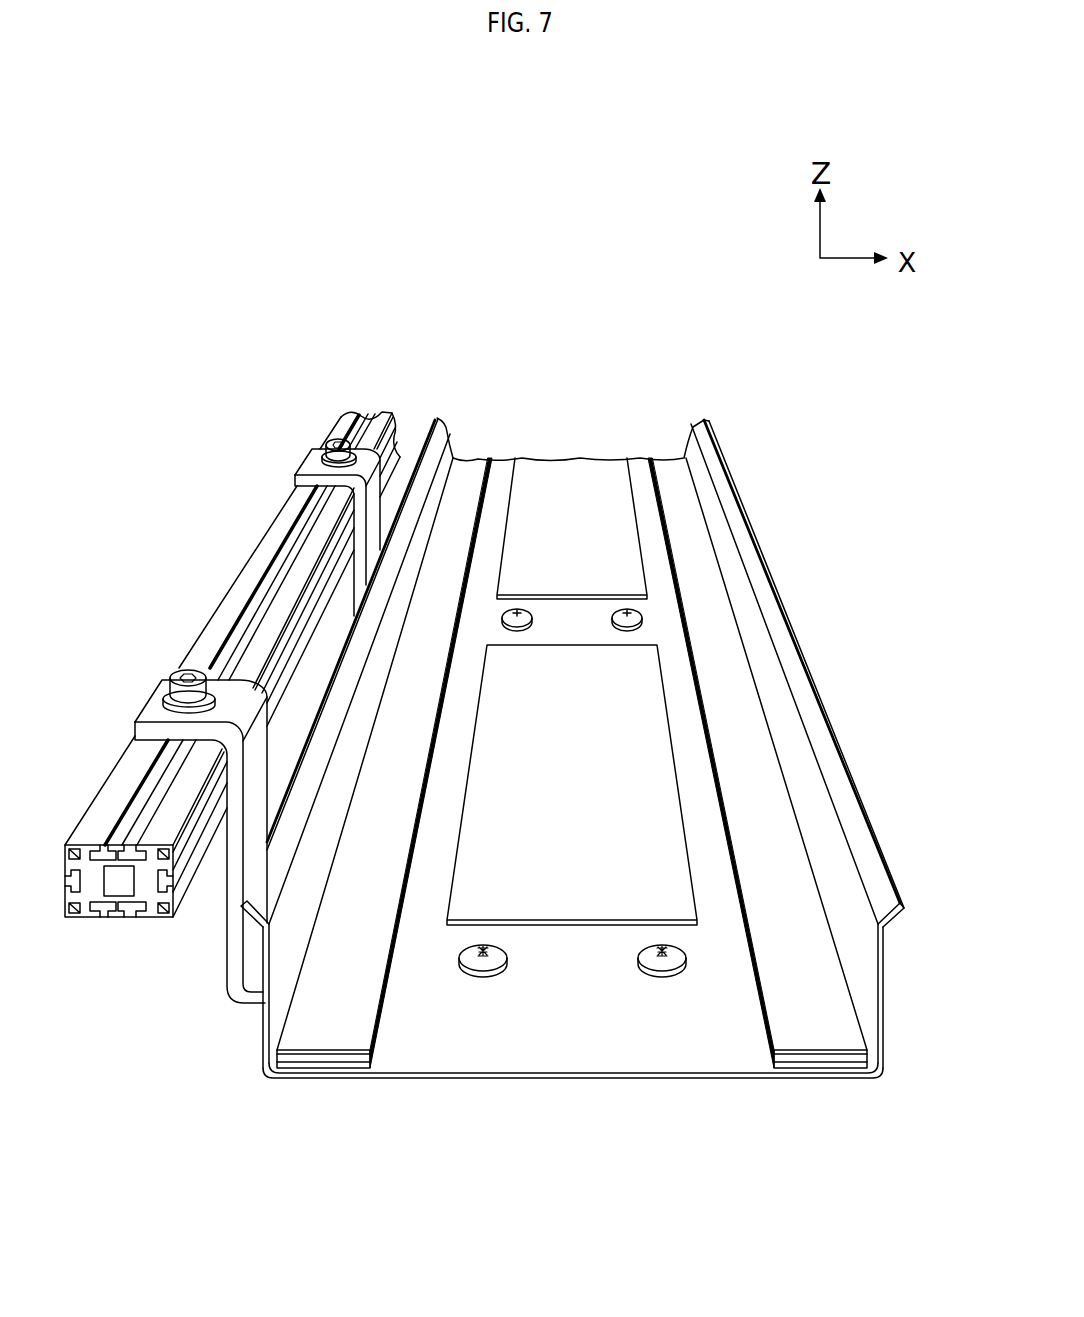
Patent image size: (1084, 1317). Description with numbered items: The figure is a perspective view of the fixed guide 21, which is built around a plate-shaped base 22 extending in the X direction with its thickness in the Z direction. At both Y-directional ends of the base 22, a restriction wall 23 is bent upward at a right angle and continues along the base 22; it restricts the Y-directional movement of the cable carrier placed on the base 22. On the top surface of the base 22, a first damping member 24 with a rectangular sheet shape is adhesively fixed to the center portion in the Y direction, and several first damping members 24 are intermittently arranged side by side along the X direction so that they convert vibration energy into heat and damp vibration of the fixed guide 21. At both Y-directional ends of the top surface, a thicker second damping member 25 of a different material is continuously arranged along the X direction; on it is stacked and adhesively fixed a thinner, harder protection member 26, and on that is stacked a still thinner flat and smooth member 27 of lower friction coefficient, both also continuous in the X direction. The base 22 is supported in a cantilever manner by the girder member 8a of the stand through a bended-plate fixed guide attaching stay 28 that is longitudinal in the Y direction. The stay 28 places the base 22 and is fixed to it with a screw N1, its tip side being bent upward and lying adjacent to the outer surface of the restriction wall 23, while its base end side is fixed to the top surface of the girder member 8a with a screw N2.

The fixed guide 21 is at (568, 771).
The base 22 is at (572, 1047).
The restriction wall 23 is at (858, 961).
The first damping member 24 is at (587, 478).
The second damping member 25 is at (358, 1066).
The protection member 26 is at (322, 1058).
The flat and smooth member 27 is at (293, 1052).
The fixed guide attaching stay 28 is at (235, 925).
The girder member 8a is at (73, 843).
The screw N1 is at (483, 962).
The screw N2 is at (337, 447).